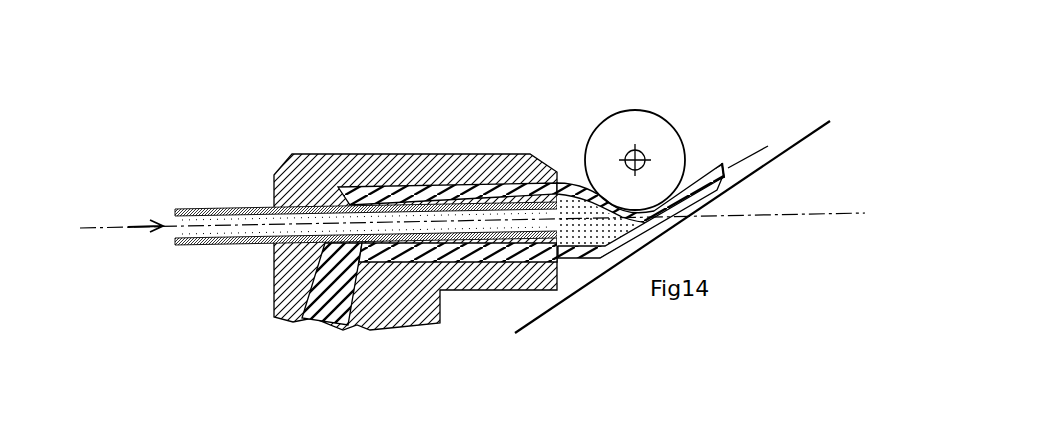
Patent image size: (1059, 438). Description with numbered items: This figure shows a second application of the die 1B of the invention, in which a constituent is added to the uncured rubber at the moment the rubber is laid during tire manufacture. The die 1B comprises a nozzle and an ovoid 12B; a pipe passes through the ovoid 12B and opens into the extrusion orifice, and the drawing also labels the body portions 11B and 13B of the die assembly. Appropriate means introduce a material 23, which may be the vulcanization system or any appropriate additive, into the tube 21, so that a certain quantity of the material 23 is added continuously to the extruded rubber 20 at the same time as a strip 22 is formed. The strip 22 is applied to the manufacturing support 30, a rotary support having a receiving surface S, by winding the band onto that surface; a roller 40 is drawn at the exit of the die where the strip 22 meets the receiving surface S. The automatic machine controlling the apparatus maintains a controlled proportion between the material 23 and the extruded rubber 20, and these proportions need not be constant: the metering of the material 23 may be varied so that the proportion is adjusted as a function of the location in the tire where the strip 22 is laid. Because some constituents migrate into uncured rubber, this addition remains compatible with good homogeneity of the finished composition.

The die 1B is at (362, 112).
The feed tube 11B is at (293, 178).
The ovoid 12B is at (558, 172).
The body member 13B is at (460, 177).
The extruded rubber 20 is at (327, 307).
The tube 21 is at (578, 188).
The strip 22 is at (722, 163).
The material 23 is at (175, 211).
The manufacturing support 30 is at (822, 180).
The pressure roller 40 is at (668, 147).
The receiving surface S is at (830, 118).